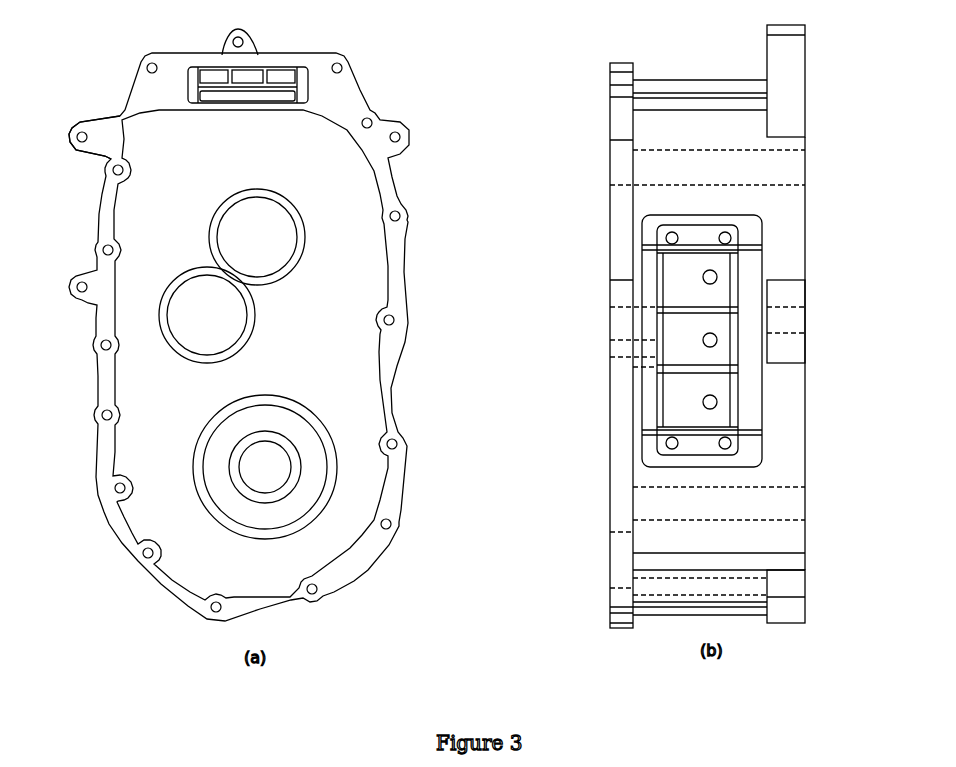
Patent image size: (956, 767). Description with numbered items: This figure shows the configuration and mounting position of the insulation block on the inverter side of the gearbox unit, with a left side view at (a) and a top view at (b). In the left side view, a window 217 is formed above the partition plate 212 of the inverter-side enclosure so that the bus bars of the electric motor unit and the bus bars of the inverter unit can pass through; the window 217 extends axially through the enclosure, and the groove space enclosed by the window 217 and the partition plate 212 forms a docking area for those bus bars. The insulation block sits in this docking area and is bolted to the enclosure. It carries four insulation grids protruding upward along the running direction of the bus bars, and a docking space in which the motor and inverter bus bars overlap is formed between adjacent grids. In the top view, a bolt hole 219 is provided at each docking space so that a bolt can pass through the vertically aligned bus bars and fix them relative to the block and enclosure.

The partition plate 212 is at (380, 168).
The window 217 is at (182, 97).
The bolt hole 219 is at (717, 402).